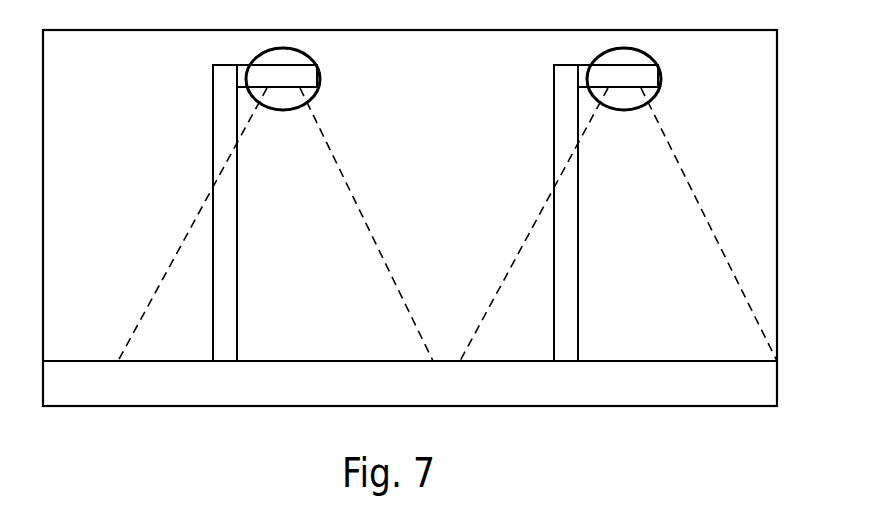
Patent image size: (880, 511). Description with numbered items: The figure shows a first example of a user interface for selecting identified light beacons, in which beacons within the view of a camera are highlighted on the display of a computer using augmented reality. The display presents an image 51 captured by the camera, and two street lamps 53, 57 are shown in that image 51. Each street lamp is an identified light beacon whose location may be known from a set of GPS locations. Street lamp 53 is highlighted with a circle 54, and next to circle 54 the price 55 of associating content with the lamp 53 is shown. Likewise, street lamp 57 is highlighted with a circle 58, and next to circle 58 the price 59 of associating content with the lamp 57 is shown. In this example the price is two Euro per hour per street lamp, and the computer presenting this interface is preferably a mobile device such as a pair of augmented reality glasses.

The image 51 is at (697, 407).
The street lamp 53 is at (302, 62).
The circle 54 is at (271, 111).
The price 55 is at (373, 92).
The street lamp 57 is at (643, 62).
The circle 58 is at (612, 111).
The price 59 is at (714, 92).